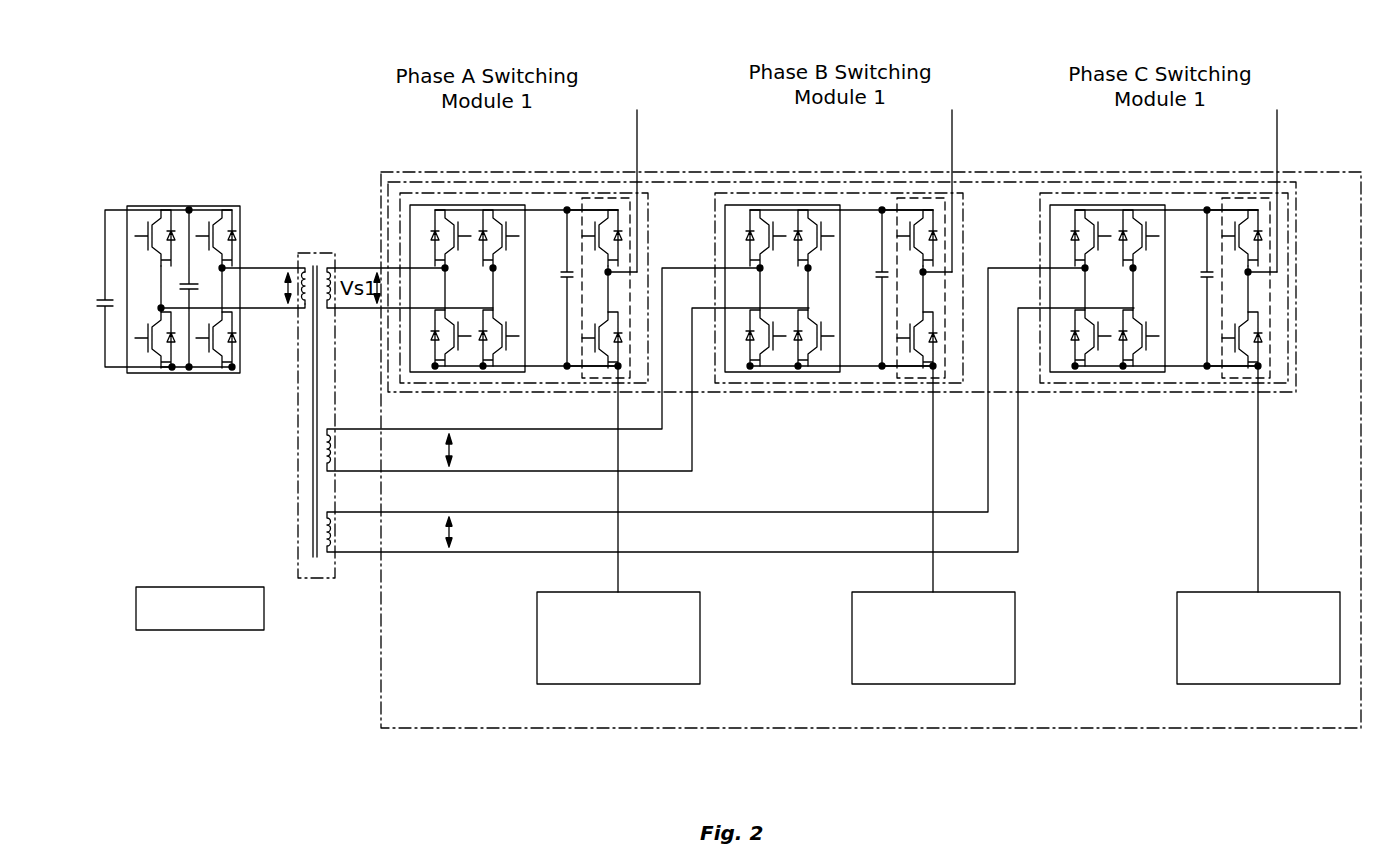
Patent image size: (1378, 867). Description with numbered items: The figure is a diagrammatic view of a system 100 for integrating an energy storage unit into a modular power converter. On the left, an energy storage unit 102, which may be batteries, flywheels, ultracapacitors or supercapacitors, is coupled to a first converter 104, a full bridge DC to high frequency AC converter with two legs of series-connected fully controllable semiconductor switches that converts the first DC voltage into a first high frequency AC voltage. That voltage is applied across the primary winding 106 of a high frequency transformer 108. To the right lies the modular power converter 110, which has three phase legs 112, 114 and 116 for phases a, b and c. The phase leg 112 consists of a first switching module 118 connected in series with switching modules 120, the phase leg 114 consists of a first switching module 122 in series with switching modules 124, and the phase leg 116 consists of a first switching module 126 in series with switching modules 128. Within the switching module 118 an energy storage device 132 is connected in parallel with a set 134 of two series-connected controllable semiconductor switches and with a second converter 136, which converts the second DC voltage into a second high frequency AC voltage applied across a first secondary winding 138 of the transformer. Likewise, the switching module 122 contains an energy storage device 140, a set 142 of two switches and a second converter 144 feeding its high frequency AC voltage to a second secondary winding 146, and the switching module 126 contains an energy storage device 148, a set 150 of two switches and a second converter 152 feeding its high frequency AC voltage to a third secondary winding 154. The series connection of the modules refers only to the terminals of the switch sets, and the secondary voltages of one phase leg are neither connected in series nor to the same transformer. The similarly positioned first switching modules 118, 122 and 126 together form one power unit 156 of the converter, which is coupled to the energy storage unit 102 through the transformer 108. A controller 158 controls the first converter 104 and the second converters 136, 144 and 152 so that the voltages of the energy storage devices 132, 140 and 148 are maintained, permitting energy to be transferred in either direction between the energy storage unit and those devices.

The system 100 is at (214, 85).
The energy storage unit 102 is at (106, 316).
The first converter 104 is at (180, 206).
The primary winding 106 is at (307, 312).
The high frequency transformer 108 is at (298, 556).
The modular power converter 110 is at (380, 728).
The phase leg 112 is at (639, 128).
The phase leg 114 is at (954, 128).
The phase leg 116 is at (1279, 128).
The first switching module 118 is at (462, 192).
The switching modules (2 to n) 120 is at (537, 677).
The first switching module 122 is at (777, 192).
The switching modules (2 to n) 124 is at (852, 677).
The first switching module 126 is at (1102, 192).
The switching modules (2 to n) 128 is at (1177, 677).
The energy storage device 132 is at (563, 270).
The set of two controllable semiconductor switches 134 is at (596, 197).
The second converter 136 is at (445, 372).
The first secondary winding 138 is at (318, 340).
The energy storage device 140 is at (878, 270).
The set of two controllable semiconductor switches 142 is at (911, 197).
The second converter 144 is at (760, 372).
The second secondary winding 146 is at (323, 452).
The energy storage device 148 is at (1203, 270).
The set of two controllable semiconductor switches 150 is at (1240, 197).
The second converter 152 is at (1085, 372).
The third secondary winding 154 is at (323, 532).
The power unit 156 is at (848, 394).
The controller 158 is at (136, 630).